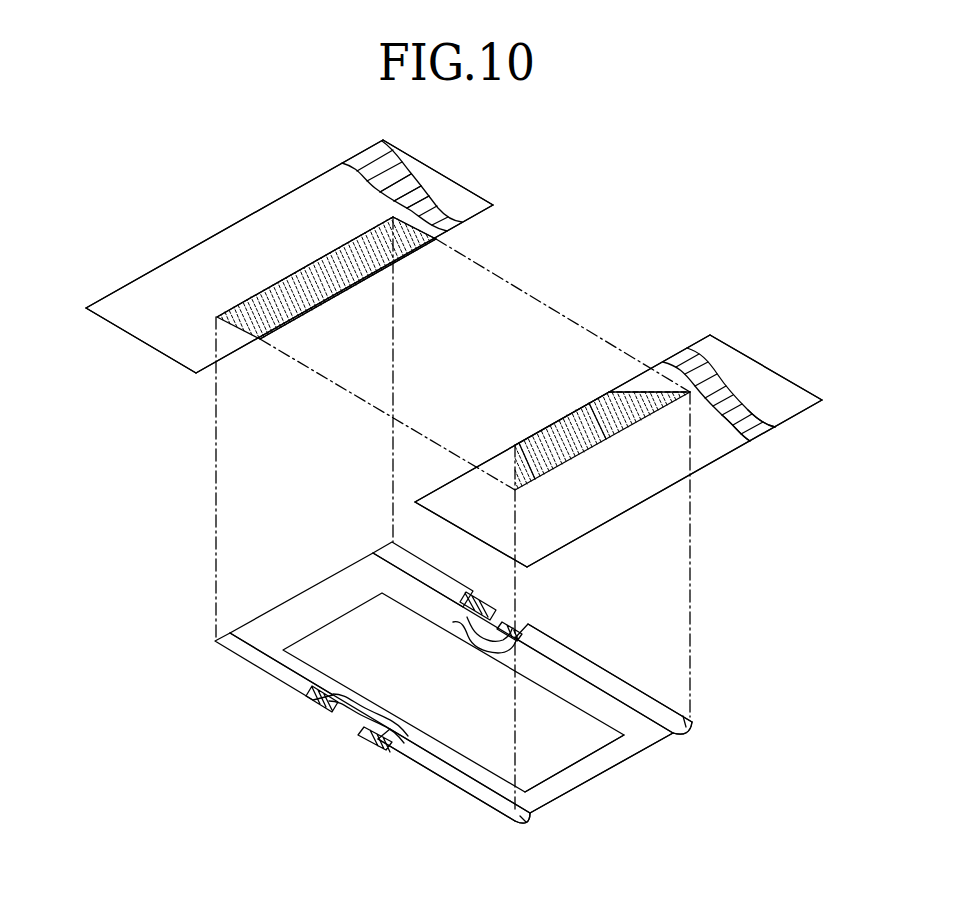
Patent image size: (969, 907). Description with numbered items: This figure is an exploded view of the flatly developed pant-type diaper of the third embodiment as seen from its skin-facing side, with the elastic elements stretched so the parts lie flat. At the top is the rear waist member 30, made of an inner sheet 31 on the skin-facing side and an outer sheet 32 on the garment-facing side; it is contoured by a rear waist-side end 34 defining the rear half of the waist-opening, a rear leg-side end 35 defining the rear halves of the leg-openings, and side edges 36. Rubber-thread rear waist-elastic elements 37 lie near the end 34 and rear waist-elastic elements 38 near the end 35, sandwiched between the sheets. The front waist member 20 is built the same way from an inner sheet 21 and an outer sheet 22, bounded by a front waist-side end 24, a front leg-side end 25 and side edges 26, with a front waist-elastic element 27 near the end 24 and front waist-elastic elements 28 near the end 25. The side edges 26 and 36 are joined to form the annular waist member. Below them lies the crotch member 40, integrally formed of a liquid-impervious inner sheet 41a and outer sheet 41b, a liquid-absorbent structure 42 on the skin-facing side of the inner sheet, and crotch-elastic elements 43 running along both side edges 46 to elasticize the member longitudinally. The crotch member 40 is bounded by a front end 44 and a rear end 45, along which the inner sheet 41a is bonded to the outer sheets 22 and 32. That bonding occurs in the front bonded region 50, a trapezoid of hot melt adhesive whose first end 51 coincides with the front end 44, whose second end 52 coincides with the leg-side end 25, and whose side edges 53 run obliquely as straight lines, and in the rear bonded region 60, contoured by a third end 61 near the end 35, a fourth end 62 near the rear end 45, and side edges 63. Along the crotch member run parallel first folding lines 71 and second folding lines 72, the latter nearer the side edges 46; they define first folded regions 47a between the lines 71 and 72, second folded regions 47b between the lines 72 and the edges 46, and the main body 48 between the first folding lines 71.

The front waist member 20 is at (627, 426).
The inner sheet 21 is at (650, 477).
The outer sheet 22 is at (683, 374).
The front waist-side end 24 is at (603, 525).
The front leg-side end 25 is at (493, 458).
The side edges 26 is at (782, 377).
The front waist-elastic element 27 is at (760, 431).
The front waist-elastic elements 28 is at (731, 432).
The rear waist member 30 is at (297, 247).
The inner sheet 31 is at (180, 267).
The outer sheet 32 is at (388, 185).
The rear waist-side end 34 is at (147, 272).
The rear leg-side end 35 is at (230, 355).
The side edges 36 is at (133, 338).
The rear waist-elastic elements 37 is at (365, 163).
The rear waist-elastic elements 38 is at (411, 178).
The crotch member 40 is at (448, 710).
The inner sheet 41a is at (302, 670).
The outer sheet 41b is at (337, 710).
The liquid-absorbent structure 42 is at (360, 617).
The crotch-elastic elements 43 is at (489, 610).
The front end 44 is at (620, 765).
The rear end 45 is at (303, 603).
The side edges 46 is at (575, 656).
The first folded regions 47a is at (690, 728).
The second folded regions 47b is at (618, 684).
The crotch member's main body 48 is at (565, 790).
The front bonded region 50 is at (536, 422).
The first end 51 is at (603, 438).
The second end 52 is at (576, 410).
The side edges 53 is at (646, 390).
The rear bonded region 60 is at (322, 318).
The third end 61 is at (357, 285).
The fourth end 62 is at (310, 263).
The side edges 63 is at (438, 236).
The first folding lines 71 is at (690, 723).
The second folding lines 72 is at (440, 753).